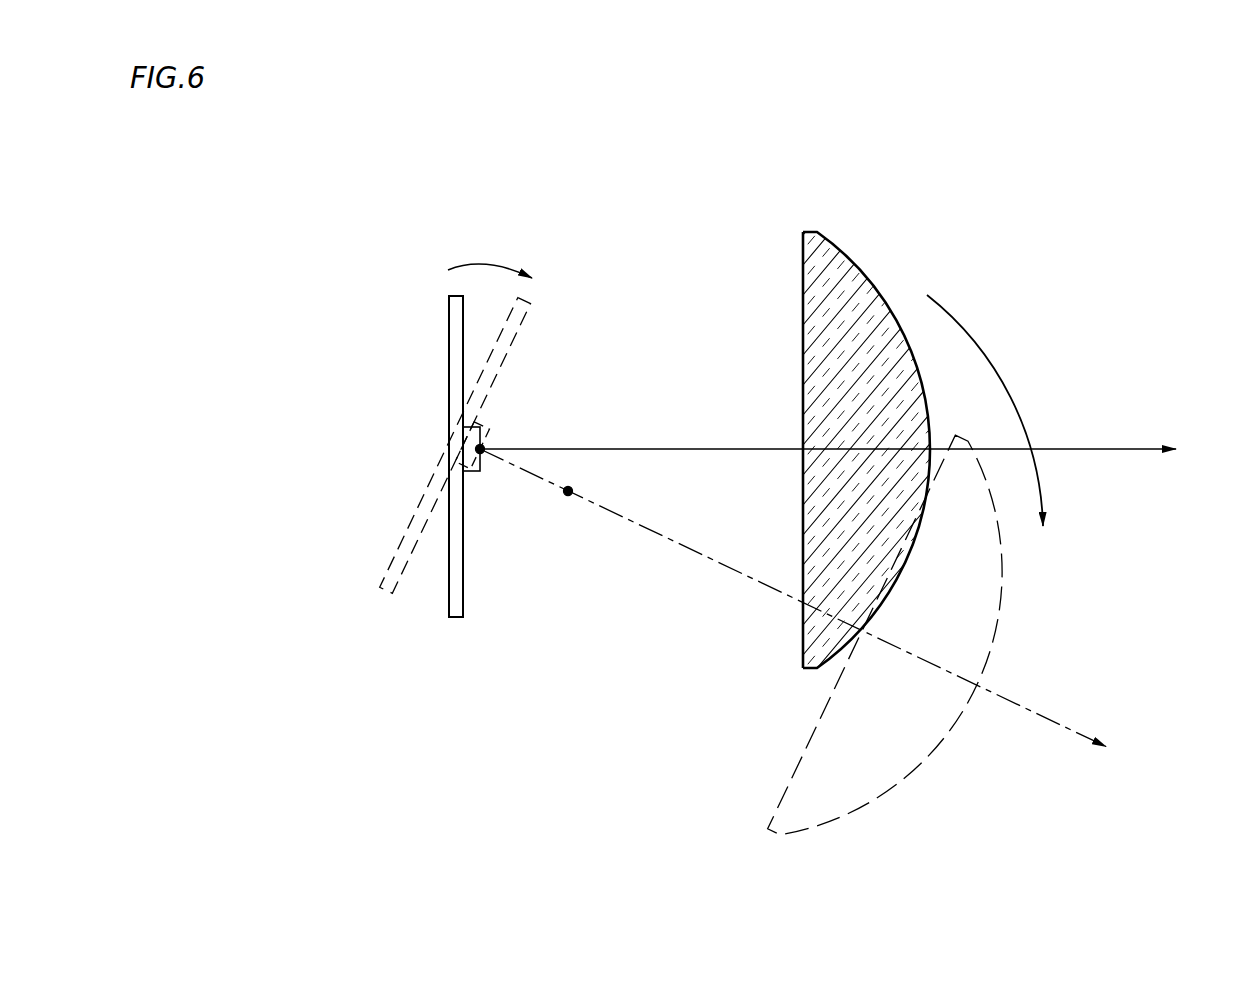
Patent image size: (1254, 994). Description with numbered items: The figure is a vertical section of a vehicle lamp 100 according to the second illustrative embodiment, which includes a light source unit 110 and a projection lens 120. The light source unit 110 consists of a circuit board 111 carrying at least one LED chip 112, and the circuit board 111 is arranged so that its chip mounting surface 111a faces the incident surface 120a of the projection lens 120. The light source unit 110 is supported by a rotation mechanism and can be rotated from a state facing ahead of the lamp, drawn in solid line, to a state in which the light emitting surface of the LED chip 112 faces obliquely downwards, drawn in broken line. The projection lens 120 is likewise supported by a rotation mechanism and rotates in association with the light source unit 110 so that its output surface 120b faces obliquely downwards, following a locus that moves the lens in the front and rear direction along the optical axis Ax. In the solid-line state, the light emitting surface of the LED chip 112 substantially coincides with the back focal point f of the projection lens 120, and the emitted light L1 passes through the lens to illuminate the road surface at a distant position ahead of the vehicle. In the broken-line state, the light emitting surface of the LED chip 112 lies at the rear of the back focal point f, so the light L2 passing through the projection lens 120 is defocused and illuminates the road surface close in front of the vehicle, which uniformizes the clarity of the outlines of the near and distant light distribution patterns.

The lamp 100 is at (627, 863).
The light source unit 110 is at (427, 226).
The circuit board 111 is at (449, 337).
The chip mounting surface 111a is at (463, 587).
The LED chip 112 is at (473, 472).
The back focal point f is at (484, 448).
The projection lens 120 is at (893, 221).
The incident surface 120a is at (749, 430).
The output surface 120b is at (901, 437).
The light L1 is at (1113, 448).
The light L2 is at (1017, 707).
The optical axis Ax is at (844, 552).